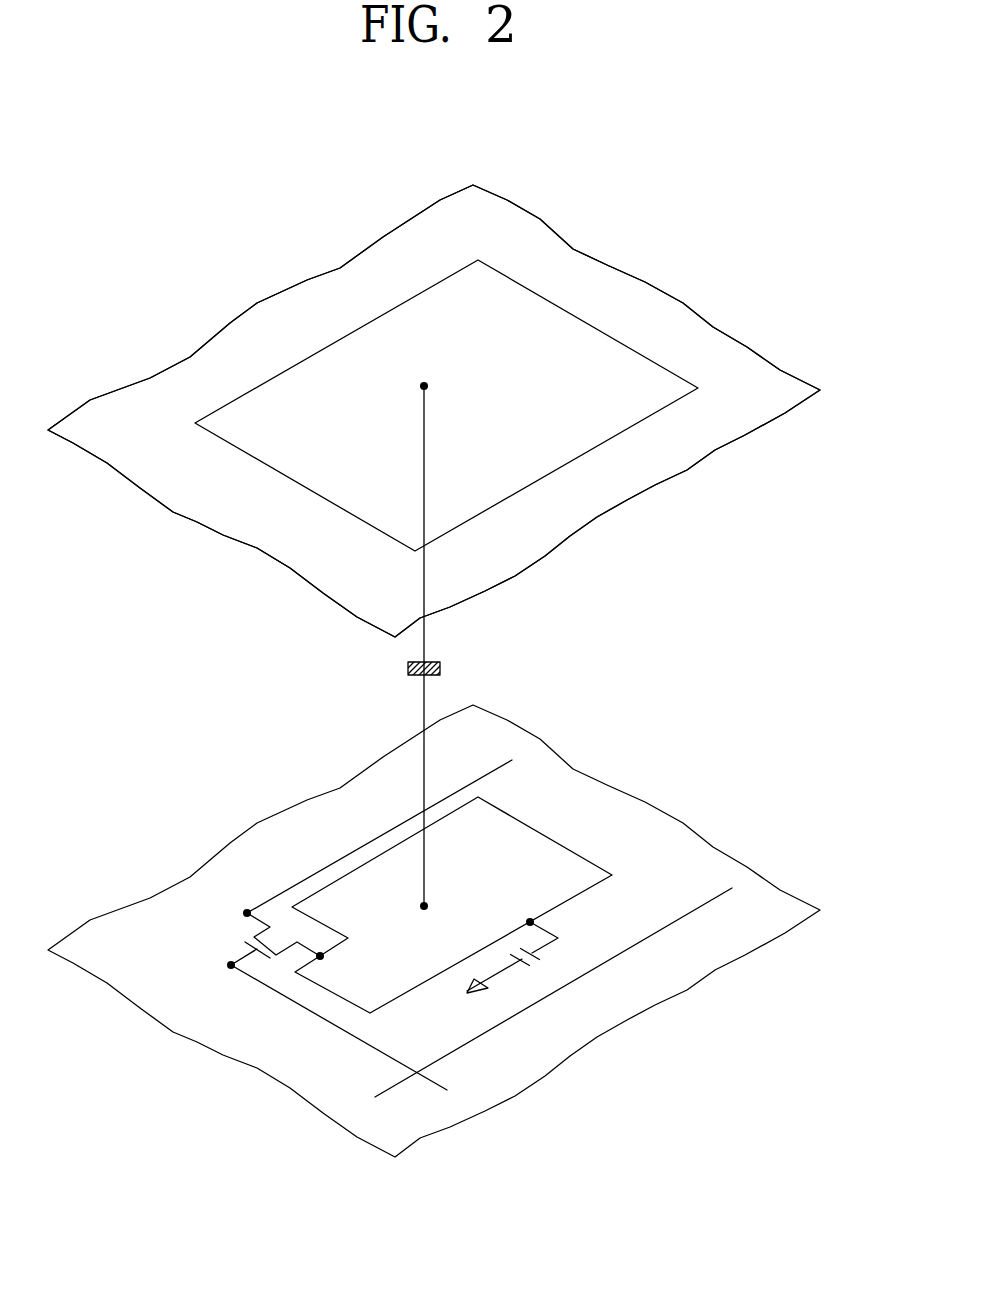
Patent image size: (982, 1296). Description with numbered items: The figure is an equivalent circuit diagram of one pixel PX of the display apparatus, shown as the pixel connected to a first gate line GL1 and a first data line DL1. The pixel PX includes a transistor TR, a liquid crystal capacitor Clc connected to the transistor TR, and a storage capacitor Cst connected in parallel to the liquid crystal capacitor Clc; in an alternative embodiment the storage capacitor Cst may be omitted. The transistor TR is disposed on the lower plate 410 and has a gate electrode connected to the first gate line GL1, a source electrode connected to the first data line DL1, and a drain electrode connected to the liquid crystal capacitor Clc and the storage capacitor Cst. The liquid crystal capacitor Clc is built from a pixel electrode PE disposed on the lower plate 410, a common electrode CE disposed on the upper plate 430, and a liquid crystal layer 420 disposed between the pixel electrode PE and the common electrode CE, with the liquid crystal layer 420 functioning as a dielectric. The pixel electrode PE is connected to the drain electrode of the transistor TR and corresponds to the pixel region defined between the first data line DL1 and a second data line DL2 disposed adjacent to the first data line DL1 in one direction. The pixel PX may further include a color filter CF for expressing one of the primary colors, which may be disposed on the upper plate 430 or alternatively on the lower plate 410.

The pixel PX is at (218, 269).
The upper plate 430 is at (513, 578).
The common electrode CE is at (700, 453).
The color filter CF is at (567, 468).
The liquid crystal capacitor Clc is at (443, 669).
The liquid crystal layer 420 is at (602, 665).
The lower plate 410 is at (597, 1038).
The pixel electrode PE is at (547, 833).
The first gate line GL1 is at (231, 965).
The first data line DL1 is at (247, 913).
The second data line DL2 is at (531, 1001).
The transistor TR is at (262, 965).
The storage capacitor Cst is at (523, 955).